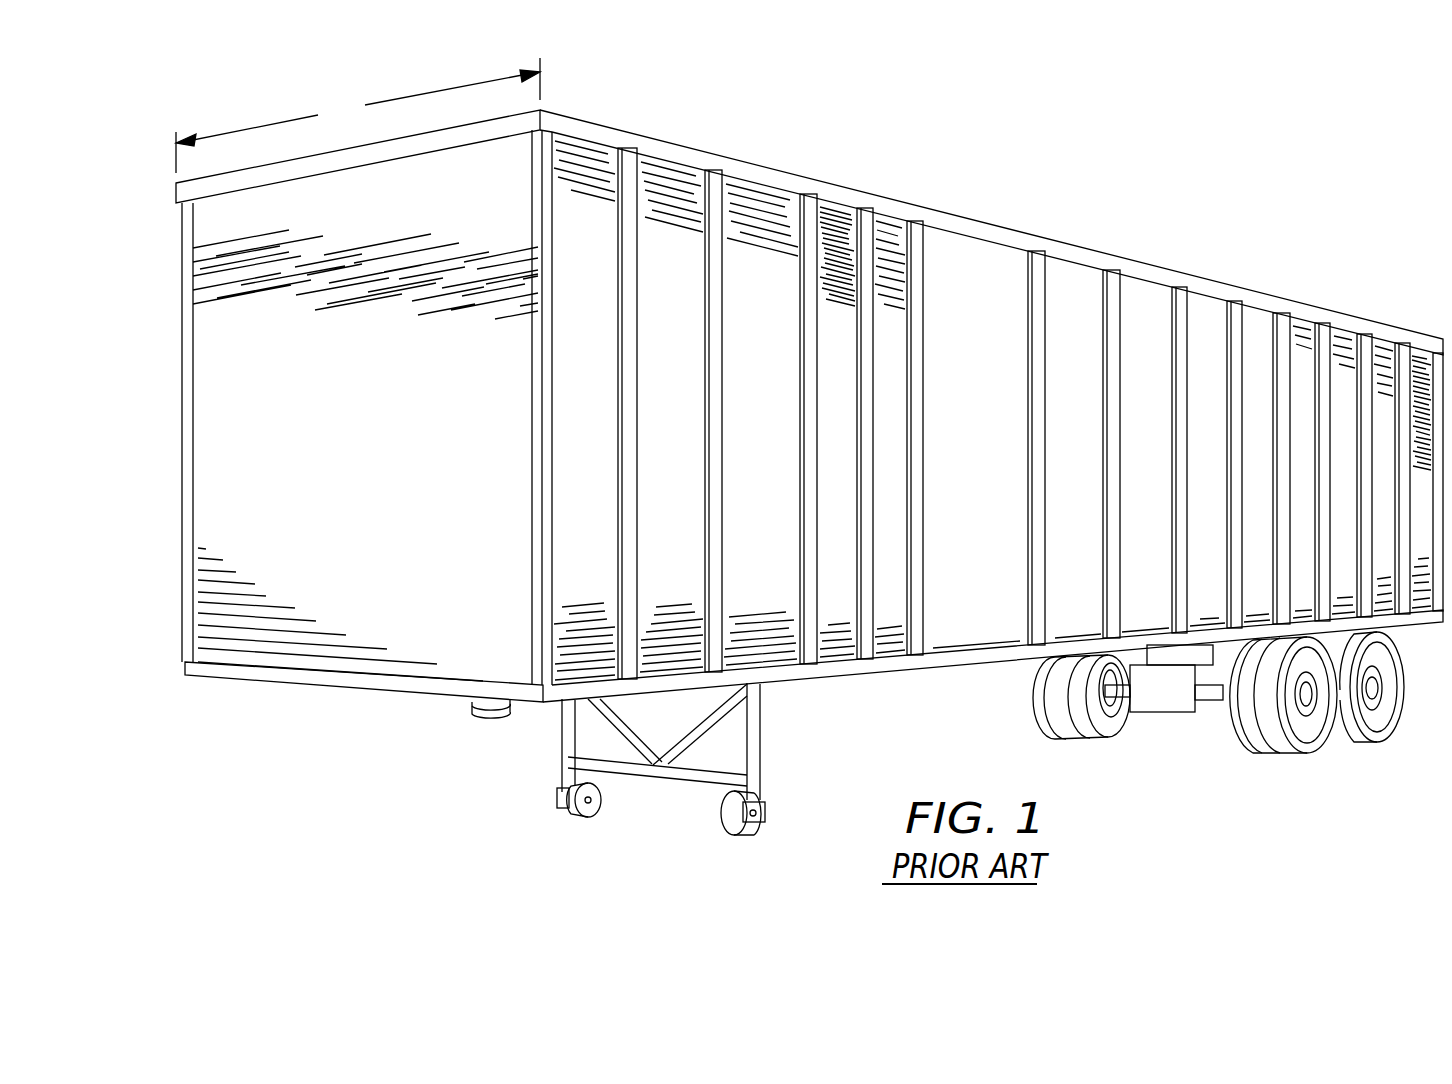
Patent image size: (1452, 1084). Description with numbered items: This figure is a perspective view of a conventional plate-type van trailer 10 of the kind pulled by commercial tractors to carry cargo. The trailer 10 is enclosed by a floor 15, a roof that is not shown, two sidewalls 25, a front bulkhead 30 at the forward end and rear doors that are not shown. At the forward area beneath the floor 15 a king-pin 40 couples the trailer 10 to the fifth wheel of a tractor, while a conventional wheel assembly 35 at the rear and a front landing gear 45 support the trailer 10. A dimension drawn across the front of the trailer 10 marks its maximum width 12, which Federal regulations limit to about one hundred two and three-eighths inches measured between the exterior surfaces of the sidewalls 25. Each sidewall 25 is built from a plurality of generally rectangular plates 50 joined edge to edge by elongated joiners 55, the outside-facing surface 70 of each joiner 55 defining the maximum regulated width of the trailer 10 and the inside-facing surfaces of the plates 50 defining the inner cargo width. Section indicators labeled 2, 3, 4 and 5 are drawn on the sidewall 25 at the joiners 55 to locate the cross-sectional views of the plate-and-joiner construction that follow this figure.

The van-type trailer 10 is at (861, 120).
The maximum width 12 is at (358, 115).
The floor 15 is at (387, 692).
The sidewalls 25 is at (246, 296).
The front bulkhead 30 is at (366, 444).
The wheel assembly 35 is at (1174, 735).
The king-pin 40 is at (482, 716).
The front landing gear 45 is at (763, 768).
The plates 50 is at (999, 512).
The joiners 55 is at (800, 533).
The outside-facing surface 70 is at (630, 362).
The section line for FIG. 2 is at (693, 290).
The section line for FIG. 3 is at (1092, 360).
The section line for FIG. 4 is at (870, 325).
The section line for FIG. 5 is at (1240, 385).